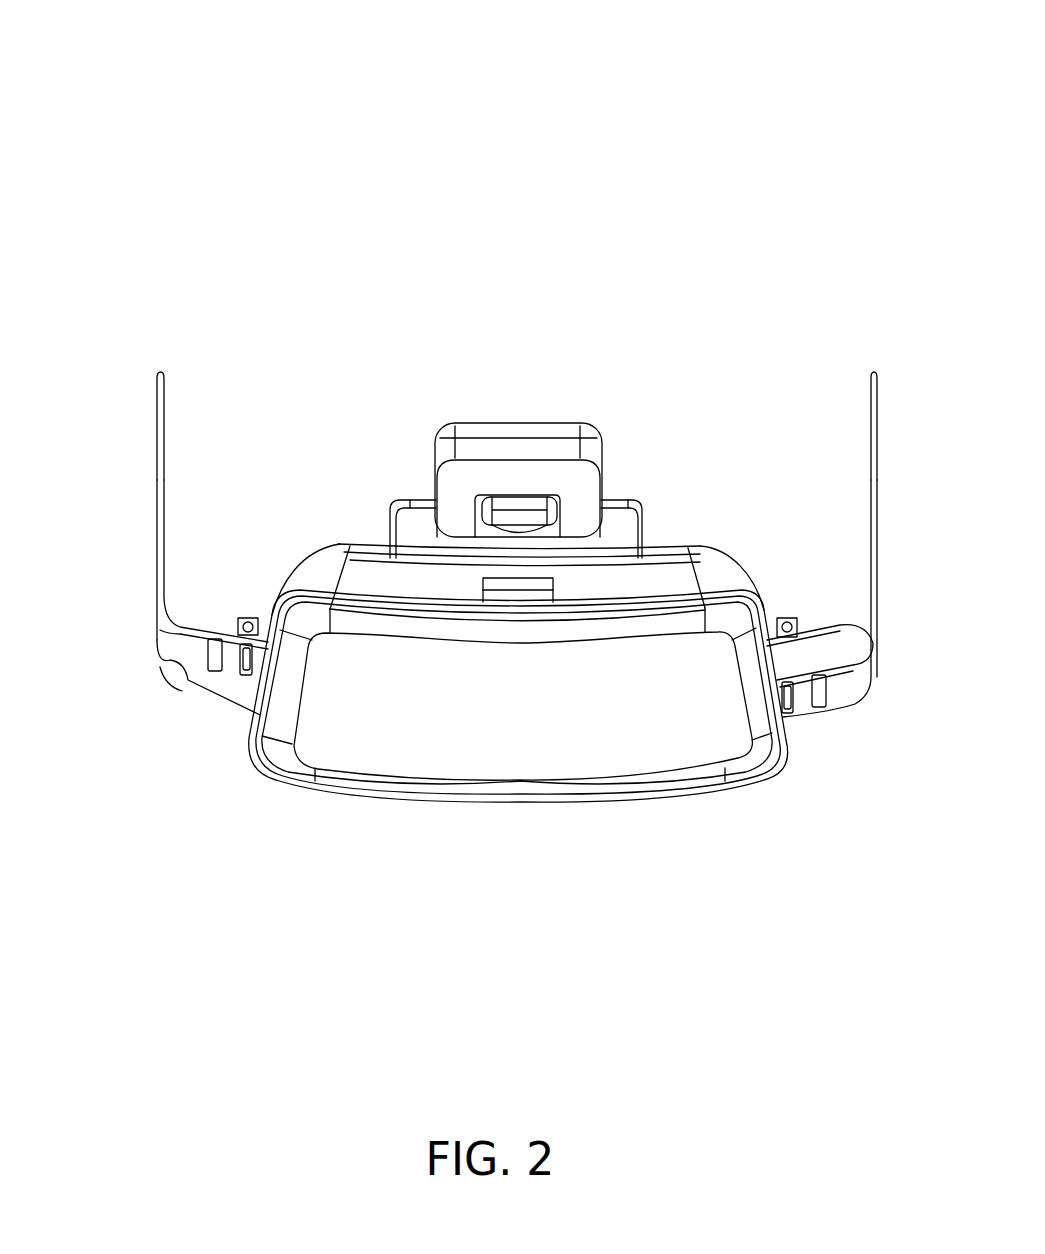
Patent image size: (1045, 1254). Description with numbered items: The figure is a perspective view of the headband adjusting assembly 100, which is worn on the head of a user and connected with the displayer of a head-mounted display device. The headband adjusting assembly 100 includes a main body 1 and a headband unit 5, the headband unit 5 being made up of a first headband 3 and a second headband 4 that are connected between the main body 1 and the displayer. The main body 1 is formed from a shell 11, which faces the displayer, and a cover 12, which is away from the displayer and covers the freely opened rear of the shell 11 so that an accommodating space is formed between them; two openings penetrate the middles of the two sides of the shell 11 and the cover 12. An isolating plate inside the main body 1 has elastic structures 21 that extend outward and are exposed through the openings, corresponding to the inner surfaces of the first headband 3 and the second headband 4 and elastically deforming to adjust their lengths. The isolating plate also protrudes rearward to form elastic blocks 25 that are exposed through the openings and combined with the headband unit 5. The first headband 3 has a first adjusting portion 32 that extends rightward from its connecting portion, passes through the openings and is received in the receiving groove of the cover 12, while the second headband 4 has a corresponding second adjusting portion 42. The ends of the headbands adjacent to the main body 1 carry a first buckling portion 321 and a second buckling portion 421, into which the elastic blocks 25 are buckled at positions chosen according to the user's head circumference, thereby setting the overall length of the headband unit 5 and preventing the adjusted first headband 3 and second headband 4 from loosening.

The headband adjusting assembly 100 is at (100, 42).
The main body 1 is at (436, 820).
The shell 11 is at (672, 565).
The cover 12 is at (620, 765).
The elastic structure 21 is at (783, 618).
The elastic block 25 is at (240, 672).
The first headband 3 is at (157, 480).
The first adjusting portion 32 is at (857, 650).
The first buckling portion 321 is at (192, 652).
The second headband 4 is at (877, 480).
The second adjusting portion 42 is at (170, 678).
The second buckling portion 421 is at (838, 691).
The headband unit 5 is at (174, 418).